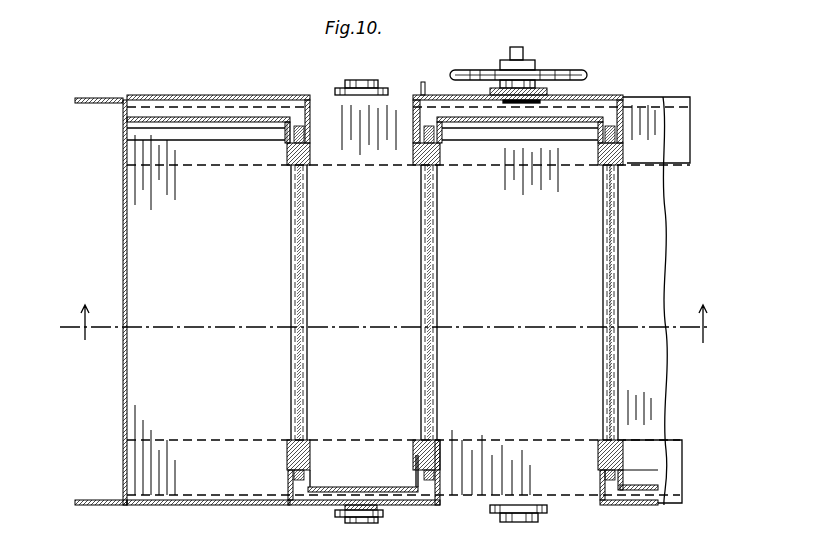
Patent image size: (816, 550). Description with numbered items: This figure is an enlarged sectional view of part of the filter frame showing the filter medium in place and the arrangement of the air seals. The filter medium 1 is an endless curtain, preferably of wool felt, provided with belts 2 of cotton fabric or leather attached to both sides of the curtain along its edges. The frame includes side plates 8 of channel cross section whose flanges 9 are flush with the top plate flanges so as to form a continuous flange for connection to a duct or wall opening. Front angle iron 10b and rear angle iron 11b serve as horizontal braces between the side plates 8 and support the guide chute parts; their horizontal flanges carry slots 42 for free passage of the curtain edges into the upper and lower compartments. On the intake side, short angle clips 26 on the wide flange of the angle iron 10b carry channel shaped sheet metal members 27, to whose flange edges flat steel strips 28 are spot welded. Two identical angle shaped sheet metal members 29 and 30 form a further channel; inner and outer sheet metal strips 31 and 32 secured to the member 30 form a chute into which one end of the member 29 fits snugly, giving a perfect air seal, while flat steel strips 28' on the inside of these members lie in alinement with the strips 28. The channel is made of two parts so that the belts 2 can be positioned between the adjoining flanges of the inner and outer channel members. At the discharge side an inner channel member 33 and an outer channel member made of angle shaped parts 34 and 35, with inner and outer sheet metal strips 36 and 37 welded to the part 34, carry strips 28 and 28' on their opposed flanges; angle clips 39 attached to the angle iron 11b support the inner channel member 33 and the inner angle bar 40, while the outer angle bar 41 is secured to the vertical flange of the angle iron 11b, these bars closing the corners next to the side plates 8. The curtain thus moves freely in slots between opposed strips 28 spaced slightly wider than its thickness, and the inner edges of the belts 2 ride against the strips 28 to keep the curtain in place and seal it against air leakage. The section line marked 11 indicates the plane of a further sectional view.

The filter medium 1 is at (612, 258).
The belts 2 is at (312, 141).
The side plates 8 is at (123, 385).
The flanges 9 is at (101, 103).
The angle iron 10b is at (680, 440).
The angle iron 11b is at (690, 148).
The section line 11 is at (398, 324).
The angle clips 26 is at (409, 477).
The channel shaped sheet metal members 27 is at (305, 478).
The flat steel strips 28 is at (433, 306).
The flat steel strips 28' is at (481, 176).
The angle shaped sheet metal member 29 is at (290, 505).
The angle shaped sheet metal member 30 is at (440, 505).
The inner sheet metal strip 31 is at (381, 511).
The outer sheet metal strip 32 is at (345, 523).
The inner channel member 33 is at (592, 123).
The angle shaped part 34 is at (607, 95).
The angle shaped part 35 is at (423, 95).
The inner sheet metal strip 36 is at (527, 103).
The outer sheet metal strip 37 is at (533, 90).
The angle clips 39 is at (200, 130).
The inner angle bar 40 is at (160, 117).
The outer angle bar 41 is at (285, 95).
The slots 42 is at (293, 130).